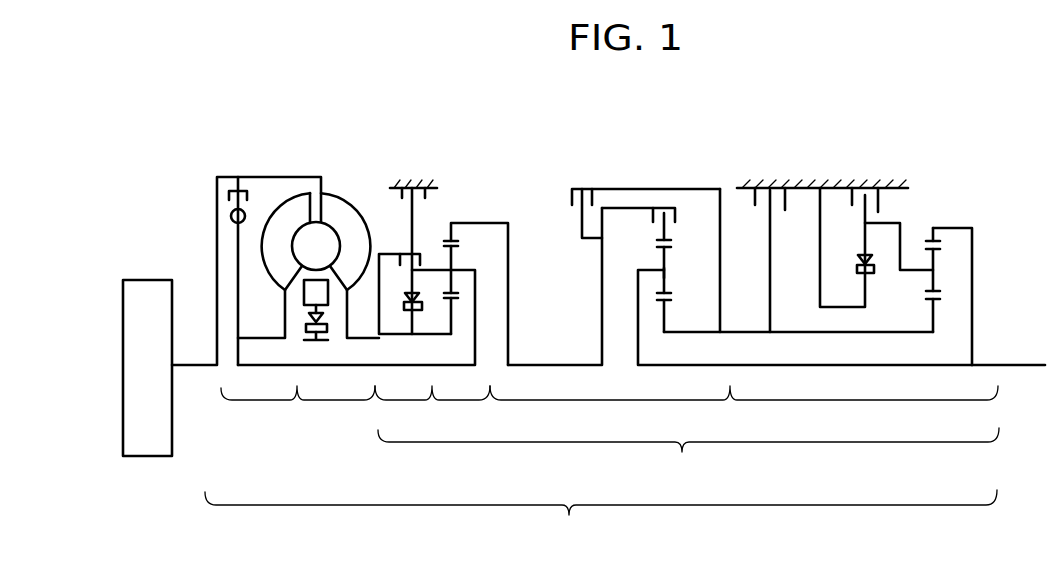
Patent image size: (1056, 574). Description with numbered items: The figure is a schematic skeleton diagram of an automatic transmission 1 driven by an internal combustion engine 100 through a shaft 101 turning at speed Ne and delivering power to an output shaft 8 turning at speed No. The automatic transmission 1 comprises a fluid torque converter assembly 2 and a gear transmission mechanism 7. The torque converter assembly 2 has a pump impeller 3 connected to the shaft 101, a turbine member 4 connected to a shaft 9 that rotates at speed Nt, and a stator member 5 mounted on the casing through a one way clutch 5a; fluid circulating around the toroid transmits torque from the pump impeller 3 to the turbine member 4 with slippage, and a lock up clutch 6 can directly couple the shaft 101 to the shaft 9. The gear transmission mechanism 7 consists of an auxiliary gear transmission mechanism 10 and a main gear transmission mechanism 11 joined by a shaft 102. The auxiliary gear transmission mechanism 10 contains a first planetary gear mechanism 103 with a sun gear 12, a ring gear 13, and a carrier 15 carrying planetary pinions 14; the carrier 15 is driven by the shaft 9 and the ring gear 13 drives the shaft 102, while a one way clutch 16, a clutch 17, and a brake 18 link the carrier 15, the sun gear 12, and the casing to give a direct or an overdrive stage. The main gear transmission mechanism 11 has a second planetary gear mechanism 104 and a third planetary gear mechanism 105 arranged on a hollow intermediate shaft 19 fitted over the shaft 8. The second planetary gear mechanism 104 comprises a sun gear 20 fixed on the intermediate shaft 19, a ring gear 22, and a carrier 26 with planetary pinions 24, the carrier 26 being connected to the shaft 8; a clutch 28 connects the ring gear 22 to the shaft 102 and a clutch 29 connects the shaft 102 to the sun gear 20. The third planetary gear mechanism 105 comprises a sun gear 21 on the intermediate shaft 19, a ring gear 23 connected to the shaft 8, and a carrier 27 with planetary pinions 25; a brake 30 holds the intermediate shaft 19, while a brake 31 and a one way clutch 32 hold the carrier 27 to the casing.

The automatic transmission 1 is at (601, 516).
The fluid torque converter assembly 2 is at (298, 402).
The pump impeller 3 is at (330, 200).
The turbine member 4 is at (282, 278).
The stator member 5 is at (304, 292).
The one way clutch 5a is at (330, 327).
The lock up clutch 6 is at (242, 284).
The gear transmission mechanism 7 is at (688, 454).
The power output shaft 8 is at (1028, 364).
The shaft 9 is at (397, 367).
The auxiliary gear transmission mechanism 10 is at (432, 411).
The main gear transmission mechanism 11 is at (744, 409).
The sun gear 12 is at (459, 300).
The ring gear 13 is at (446, 240).
The planetary pinions 14 is at (458, 247).
The carrier 15 is at (474, 298).
The one way clutch F0 16 is at (418, 298).
The clutch C0 17 is at (407, 252).
The brake B0 18 is at (408, 186).
The intermediate shaft 19 is at (855, 334).
The sun gear 20 is at (671, 299).
The sun gear 21 is at (940, 300).
The ring gear 22 is at (671, 244).
The ring gear 23 is at (940, 245).
The planetary pinions 24 is at (671, 276).
The planetary pinions 25 is at (940, 291).
The carrier 26 is at (637, 287).
The carrier 27 is at (905, 245).
The clutch C1 28 is at (660, 206).
The clutch C2 29 is at (588, 186).
The brake B1 30 is at (785, 188).
The brake B2 31 is at (880, 190).
The one way clutch F1 32 is at (875, 270).
The internal combustion engine 100 is at (160, 458).
The shaft 101 is at (197, 363).
The shaft 102 is at (558, 363).
The first planetary gear mechanism 103 is at (477, 218).
The second planetary gear mechanism 104 is at (700, 202).
The third planetary gear mechanism 105 is at (953, 255).